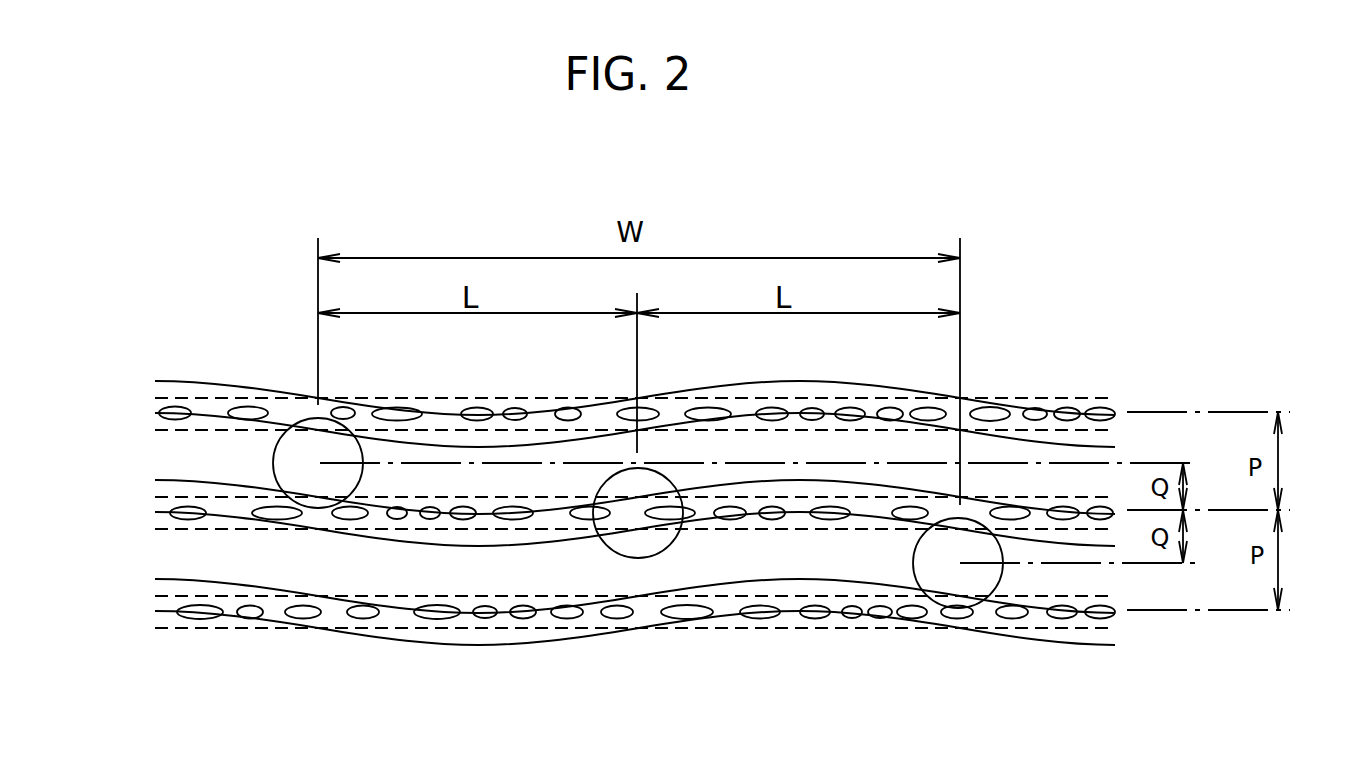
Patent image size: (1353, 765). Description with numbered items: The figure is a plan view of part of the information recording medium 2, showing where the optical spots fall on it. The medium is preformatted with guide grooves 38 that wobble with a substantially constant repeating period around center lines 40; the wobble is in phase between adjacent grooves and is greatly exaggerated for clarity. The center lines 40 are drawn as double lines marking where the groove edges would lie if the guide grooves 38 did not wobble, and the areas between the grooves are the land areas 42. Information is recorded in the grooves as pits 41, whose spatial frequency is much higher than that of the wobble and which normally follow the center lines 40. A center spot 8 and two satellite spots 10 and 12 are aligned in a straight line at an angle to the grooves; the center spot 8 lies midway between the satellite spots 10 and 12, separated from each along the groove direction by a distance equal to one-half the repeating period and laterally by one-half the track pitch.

The information recording medium 2 is at (143, 378).
The center spot 8 is at (610, 547).
The satellite spot 10 is at (312, 508).
The satellite spot 12 is at (912, 570).
The guide grooves 38 is at (180, 380).
The center lines 40 is at (255, 398).
The pits 41 is at (383, 403).
The land areas 42 is at (153, 462).